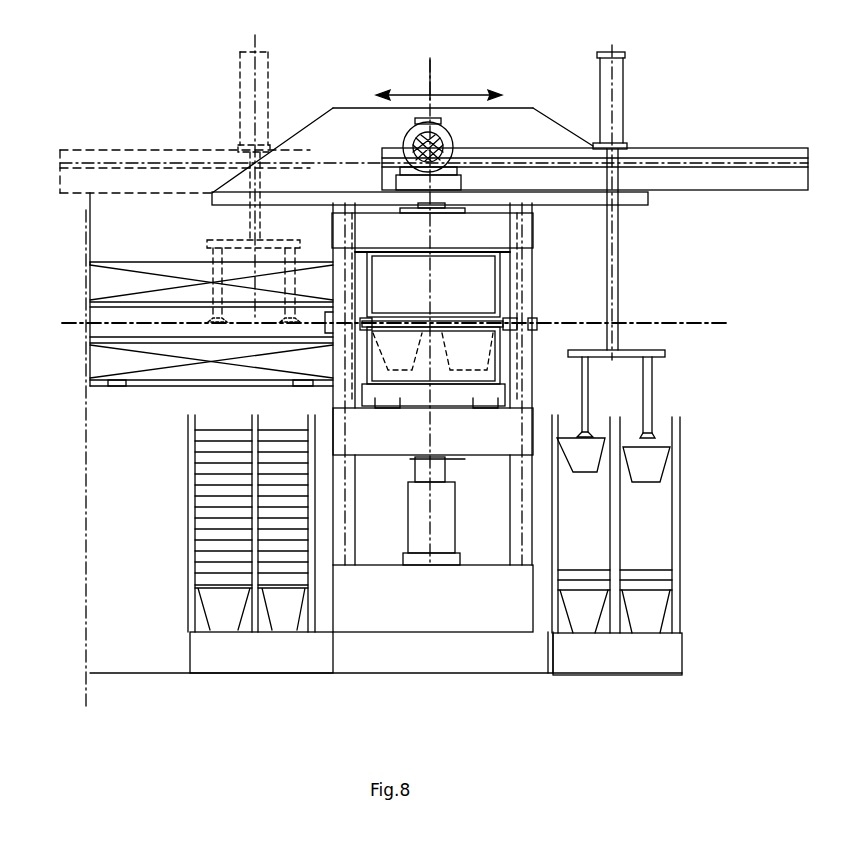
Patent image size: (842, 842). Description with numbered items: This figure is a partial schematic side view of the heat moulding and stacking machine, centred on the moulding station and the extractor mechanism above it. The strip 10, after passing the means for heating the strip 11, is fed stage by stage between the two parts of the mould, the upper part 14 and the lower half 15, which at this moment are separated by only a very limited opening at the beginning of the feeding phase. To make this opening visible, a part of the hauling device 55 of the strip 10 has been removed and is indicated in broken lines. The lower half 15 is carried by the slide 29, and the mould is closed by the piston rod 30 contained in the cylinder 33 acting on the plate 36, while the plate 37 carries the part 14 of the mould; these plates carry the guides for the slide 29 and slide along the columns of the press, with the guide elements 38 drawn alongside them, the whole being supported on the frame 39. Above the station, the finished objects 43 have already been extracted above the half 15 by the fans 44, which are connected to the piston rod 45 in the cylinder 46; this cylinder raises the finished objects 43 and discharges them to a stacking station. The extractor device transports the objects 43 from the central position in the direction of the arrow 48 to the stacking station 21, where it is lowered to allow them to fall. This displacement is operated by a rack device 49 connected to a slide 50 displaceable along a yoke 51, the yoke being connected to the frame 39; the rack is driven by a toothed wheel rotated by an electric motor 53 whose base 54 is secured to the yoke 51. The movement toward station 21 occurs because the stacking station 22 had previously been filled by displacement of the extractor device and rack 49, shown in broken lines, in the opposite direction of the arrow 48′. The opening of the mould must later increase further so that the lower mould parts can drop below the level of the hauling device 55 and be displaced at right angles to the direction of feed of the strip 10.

The strip 10 is at (60, 323).
The means for heating the strip 11 is at (163, 278).
The part of the mould 14 is at (500, 288).
The half of the mould 15 is at (495, 362).
The stacking station 21 is at (692, 568).
The stacking station 22 is at (258, 648).
The slide 29 is at (422, 397).
The piston rod 30 is at (446, 472).
The cylinder 33 is at (417, 527).
The plate 36 is at (345, 425).
The plate 37 is at (527, 245).
The guide rod 38 is at (395, 553).
The frame 39 is at (165, 652).
The finished objects 43 is at (588, 462).
The fans 44 is at (588, 432).
The piston rod 45 is at (620, 300).
The cylinder 46 is at (268, 78).
The arrow 48 is at (466, 68).
The arrow 48' is at (403, 68).
The rack device 49 is at (692, 165).
The slide 50 is at (745, 150).
The yoke 51 is at (325, 113).
The electric motor 53 is at (438, 143).
The base 54 is at (530, 225).
The hauling device 55 is at (520, 327).